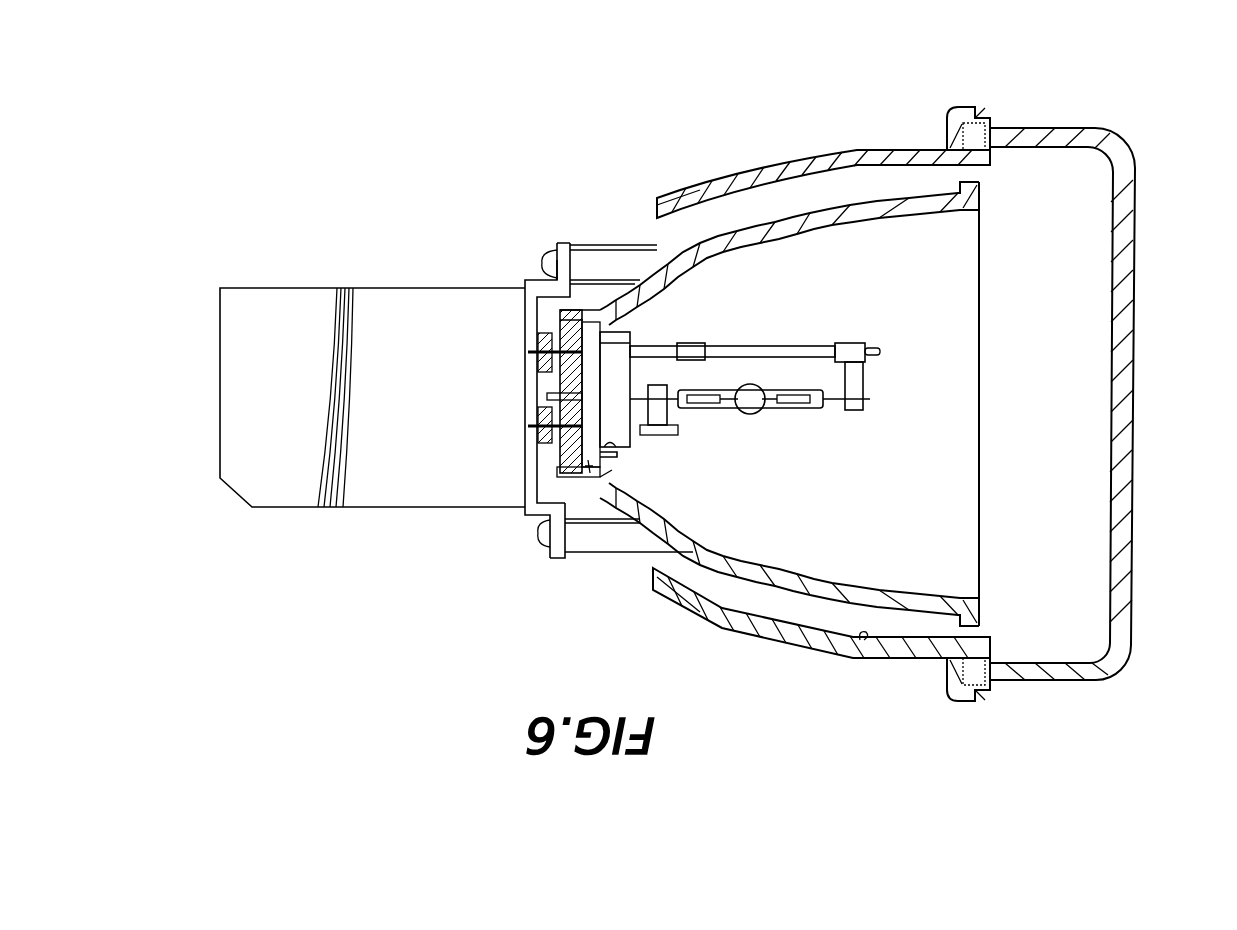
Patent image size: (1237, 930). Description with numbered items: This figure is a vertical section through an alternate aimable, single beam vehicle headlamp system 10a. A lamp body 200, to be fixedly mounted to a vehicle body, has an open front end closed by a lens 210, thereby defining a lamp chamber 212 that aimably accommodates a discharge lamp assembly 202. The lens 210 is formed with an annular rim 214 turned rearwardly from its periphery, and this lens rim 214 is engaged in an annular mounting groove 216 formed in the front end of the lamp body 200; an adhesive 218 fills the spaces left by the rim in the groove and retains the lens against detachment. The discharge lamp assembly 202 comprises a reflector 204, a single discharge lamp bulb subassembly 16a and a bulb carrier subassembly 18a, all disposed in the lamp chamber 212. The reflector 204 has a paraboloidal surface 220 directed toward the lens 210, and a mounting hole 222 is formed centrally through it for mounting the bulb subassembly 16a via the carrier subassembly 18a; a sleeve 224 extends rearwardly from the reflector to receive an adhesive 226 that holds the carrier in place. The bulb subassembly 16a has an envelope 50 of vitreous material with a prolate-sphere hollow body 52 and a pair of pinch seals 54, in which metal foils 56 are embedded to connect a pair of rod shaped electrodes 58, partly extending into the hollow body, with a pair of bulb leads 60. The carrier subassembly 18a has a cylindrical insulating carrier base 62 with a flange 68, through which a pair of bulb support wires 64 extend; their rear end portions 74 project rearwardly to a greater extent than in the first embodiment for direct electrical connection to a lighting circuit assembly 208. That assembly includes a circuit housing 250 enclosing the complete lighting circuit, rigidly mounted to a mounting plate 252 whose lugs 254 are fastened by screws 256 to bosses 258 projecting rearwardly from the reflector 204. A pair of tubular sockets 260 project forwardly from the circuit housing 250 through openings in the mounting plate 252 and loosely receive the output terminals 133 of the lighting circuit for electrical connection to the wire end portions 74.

The aimable headlamp system 10a is at (1024, 732).
The discharge lamp bulb subassembly 16a is at (787, 486).
The bulb carrier subassembly 18a is at (869, 345).
The bulb envelope 50 is at (753, 412).
The hollow body 52 is at (731, 413).
The pinch seals 54 is at (672, 405).
The metal foils 56 is at (700, 388).
The rod shaped electrodes 58 is at (727, 385).
The bulb leads 60 is at (668, 385).
The carrier base 62 is at (618, 444).
The bulb support wires 64 is at (820, 343).
The carrier base flange 68 is at (588, 468).
The rear end portions of bulb support wires 74 is at (537, 346).
The output terminals 133 is at (535, 340).
The lamp body 200 is at (827, 647).
The discharge lamp assembly 202 is at (1002, 442).
The reflector 204 is at (783, 590).
The lighting circuit assembly 208 is at (218, 492).
The lens 210 is at (1138, 462).
The lamp chamber 212 is at (863, 640).
The annular lens rim 214 is at (1097, 128).
The annular mounting groove 216 is at (987, 138).
The adhesive 218 is at (970, 110).
The paraboloidal surface 220 is at (740, 558).
The mounting hole 222 is at (628, 452).
The sleeve 224 is at (540, 520).
The adhesive 226 is at (545, 514).
The circuit housing 250 is at (285, 498).
The mounting plate 252 is at (525, 507).
The lugs 254 is at (560, 243).
The screws 256 is at (542, 268).
The bosses 258 is at (612, 244).
The tubular sockets 260 is at (558, 376).